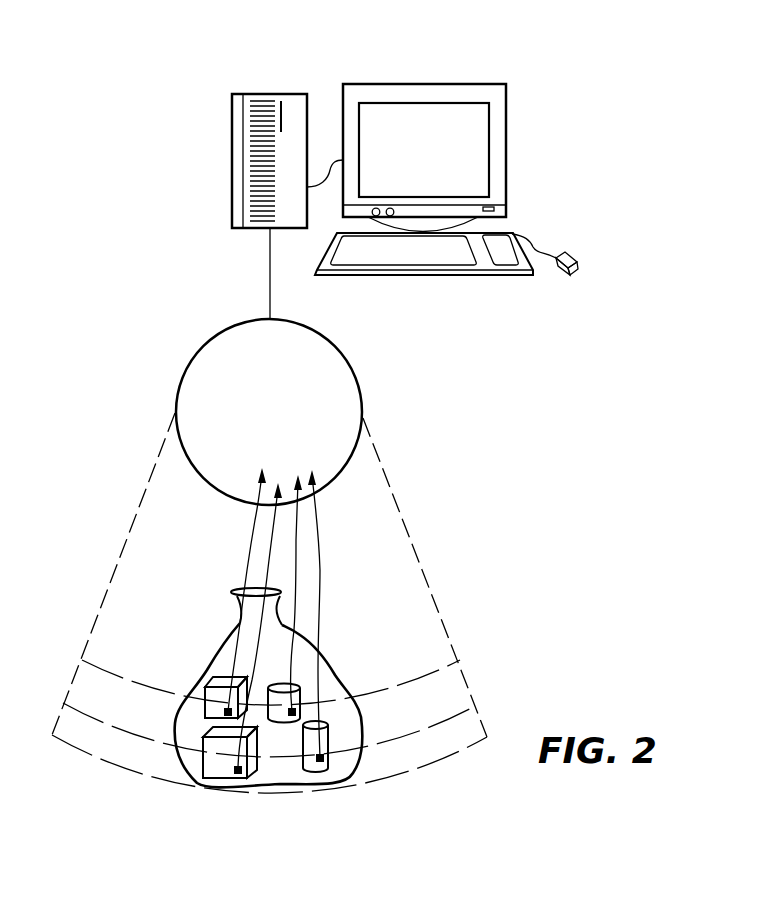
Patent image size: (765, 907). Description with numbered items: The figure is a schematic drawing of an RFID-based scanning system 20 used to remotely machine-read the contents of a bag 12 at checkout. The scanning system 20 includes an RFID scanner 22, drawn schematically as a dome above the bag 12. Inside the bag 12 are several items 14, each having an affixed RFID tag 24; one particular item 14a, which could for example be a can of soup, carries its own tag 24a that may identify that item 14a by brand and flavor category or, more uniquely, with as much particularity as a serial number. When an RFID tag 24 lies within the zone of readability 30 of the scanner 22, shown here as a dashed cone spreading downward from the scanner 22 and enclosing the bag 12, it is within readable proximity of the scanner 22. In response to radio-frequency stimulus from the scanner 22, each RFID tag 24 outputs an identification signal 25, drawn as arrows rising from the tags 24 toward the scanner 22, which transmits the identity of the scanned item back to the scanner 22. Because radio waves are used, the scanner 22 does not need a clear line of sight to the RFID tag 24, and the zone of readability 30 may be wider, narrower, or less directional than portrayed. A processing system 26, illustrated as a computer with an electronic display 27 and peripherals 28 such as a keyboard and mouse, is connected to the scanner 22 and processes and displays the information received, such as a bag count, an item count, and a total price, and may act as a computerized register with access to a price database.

The bag 12 is at (325, 671).
The item 14 is at (203, 748).
The item 14a is at (323, 758).
The scanning system 20 is at (421, 390).
The RFID scanner 22 is at (228, 340).
The RFID tag 24 is at (213, 685).
The RFID tag 24a is at (329, 743).
The identification signal 25 is at (298, 522).
The processing system 26 is at (209, 156).
The electronic display 27 is at (450, 84).
The peripherals 28 is at (577, 288).
The zone of readability 30 is at (425, 577).